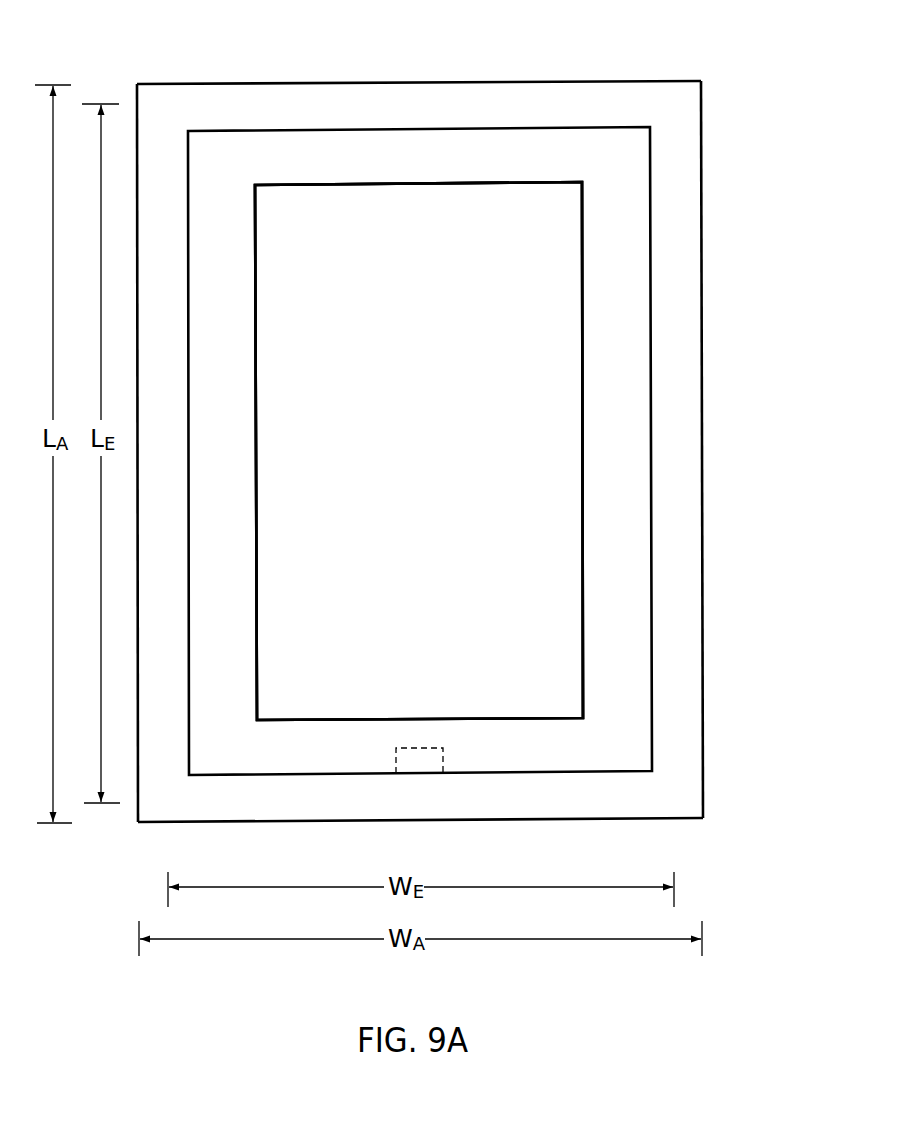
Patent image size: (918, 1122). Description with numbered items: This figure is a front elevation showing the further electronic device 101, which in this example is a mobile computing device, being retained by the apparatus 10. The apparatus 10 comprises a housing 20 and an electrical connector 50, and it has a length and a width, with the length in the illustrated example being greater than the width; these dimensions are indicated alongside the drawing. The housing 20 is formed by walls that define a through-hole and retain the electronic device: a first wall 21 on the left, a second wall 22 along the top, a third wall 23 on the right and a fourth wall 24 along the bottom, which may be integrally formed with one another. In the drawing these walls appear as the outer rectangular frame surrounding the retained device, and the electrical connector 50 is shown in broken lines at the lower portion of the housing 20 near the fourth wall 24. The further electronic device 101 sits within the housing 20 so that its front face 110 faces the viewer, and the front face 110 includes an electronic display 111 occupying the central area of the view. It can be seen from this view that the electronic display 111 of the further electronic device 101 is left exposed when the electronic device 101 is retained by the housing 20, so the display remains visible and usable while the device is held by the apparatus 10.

The apparatus 10 is at (413, 480).
The housing 20 is at (678, 788).
The first wall 21 is at (163, 368).
The second wall 22 is at (405, 100).
The third wall 23 is at (678, 338).
The fourth wall 24 is at (503, 795).
The electrical connector 50 is at (449, 762).
The further electronic device 101 is at (625, 713).
The front face 110 is at (628, 191).
The electronic display 111 is at (550, 283).